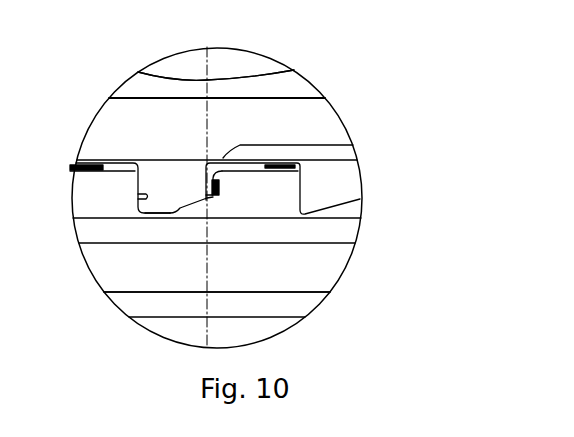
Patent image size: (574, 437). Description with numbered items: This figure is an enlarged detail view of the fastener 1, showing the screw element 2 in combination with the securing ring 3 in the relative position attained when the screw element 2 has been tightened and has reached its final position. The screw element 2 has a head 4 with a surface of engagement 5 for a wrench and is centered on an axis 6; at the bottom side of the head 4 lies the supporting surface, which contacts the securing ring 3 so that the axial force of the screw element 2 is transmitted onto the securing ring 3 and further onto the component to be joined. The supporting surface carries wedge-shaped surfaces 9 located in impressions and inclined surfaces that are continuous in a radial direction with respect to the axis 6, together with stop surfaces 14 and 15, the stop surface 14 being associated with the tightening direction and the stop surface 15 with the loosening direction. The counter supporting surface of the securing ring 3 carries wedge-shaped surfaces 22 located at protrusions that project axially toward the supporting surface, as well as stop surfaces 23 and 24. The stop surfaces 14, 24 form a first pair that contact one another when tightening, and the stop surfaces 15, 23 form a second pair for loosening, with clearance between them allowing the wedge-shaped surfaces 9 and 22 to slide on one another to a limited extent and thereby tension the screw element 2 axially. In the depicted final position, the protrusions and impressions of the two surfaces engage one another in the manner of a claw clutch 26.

The fastener 1 is at (95, 69).
The screw element 2 is at (290, 88).
The securing ring 3 is at (322, 263).
The head 4 is at (232, 63).
The surface of engagement 5 is at (216, 75).
The axis 6 is at (208, 268).
The wedge-shaped surfaces 9 is at (163, 210).
The stop surface 14 is at (145, 197).
The stop surface 15 is at (262, 144).
The wedge-shaped surfaces 22 is at (180, 208).
The stop surface 23 is at (218, 187).
The stop surface 24 is at (137, 184).
The claw clutch 26 is at (107, 157).